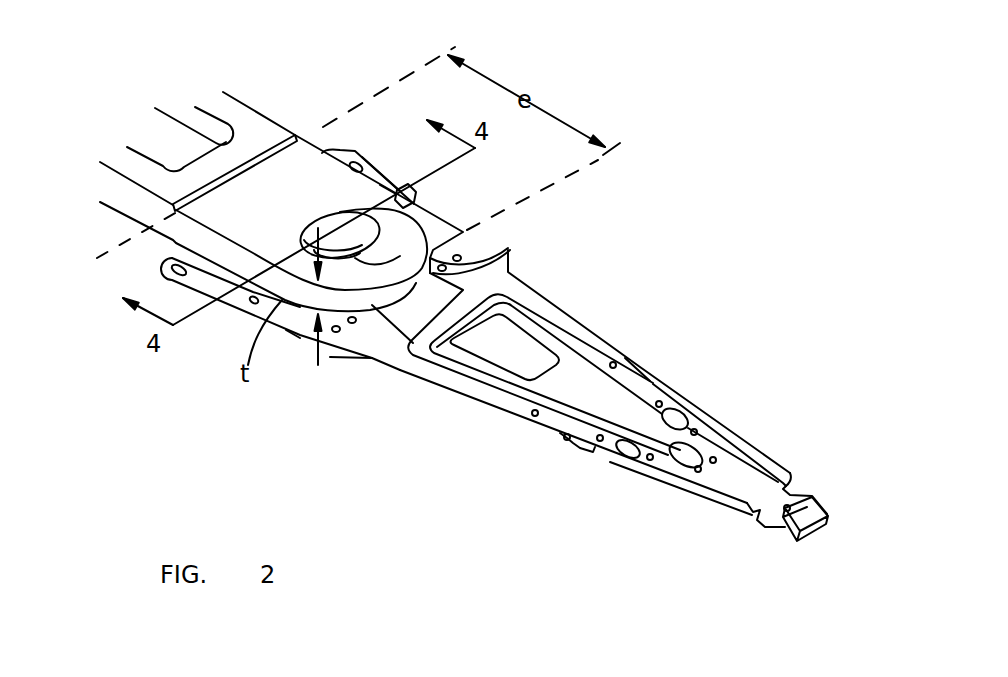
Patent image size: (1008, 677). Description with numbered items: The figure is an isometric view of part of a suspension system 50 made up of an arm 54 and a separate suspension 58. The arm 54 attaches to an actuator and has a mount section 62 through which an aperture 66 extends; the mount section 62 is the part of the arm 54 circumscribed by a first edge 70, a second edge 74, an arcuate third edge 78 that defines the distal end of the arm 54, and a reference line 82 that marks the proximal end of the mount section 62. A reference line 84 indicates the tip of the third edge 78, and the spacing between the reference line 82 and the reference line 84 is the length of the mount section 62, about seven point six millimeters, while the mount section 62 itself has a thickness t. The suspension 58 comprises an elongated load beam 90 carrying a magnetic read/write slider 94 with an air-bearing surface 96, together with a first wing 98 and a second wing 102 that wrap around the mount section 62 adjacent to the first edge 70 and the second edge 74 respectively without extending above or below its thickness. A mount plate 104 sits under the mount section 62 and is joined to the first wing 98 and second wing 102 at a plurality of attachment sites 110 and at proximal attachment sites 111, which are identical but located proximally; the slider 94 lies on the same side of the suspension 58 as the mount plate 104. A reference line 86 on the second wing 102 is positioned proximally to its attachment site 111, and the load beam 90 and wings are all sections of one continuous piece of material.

The suspension system 50 is at (649, 417).
The arm 54 is at (240, 100).
The suspension 58 is at (428, 380).
The mount section 62 is at (292, 211).
The aperture 66 is at (356, 235).
The first edge 70 is at (220, 252).
The second edge 74 is at (326, 155).
The third edge 78 is at (390, 292).
The reference line 82 is at (122, 244).
The reference line 84 is at (584, 166).
The reference line 86 is at (395, 193).
The load beam 90 is at (588, 342).
The magnetic read/write slider 94 is at (828, 516).
The air-bearing surface 96 is at (796, 534).
The first wing 98 is at (190, 288).
The second wing 102 is at (380, 152).
The mount plate 104 is at (298, 338).
The attachment sites 110 is at (509, 249).
The proximal attachment site 111 is at (418, 198).